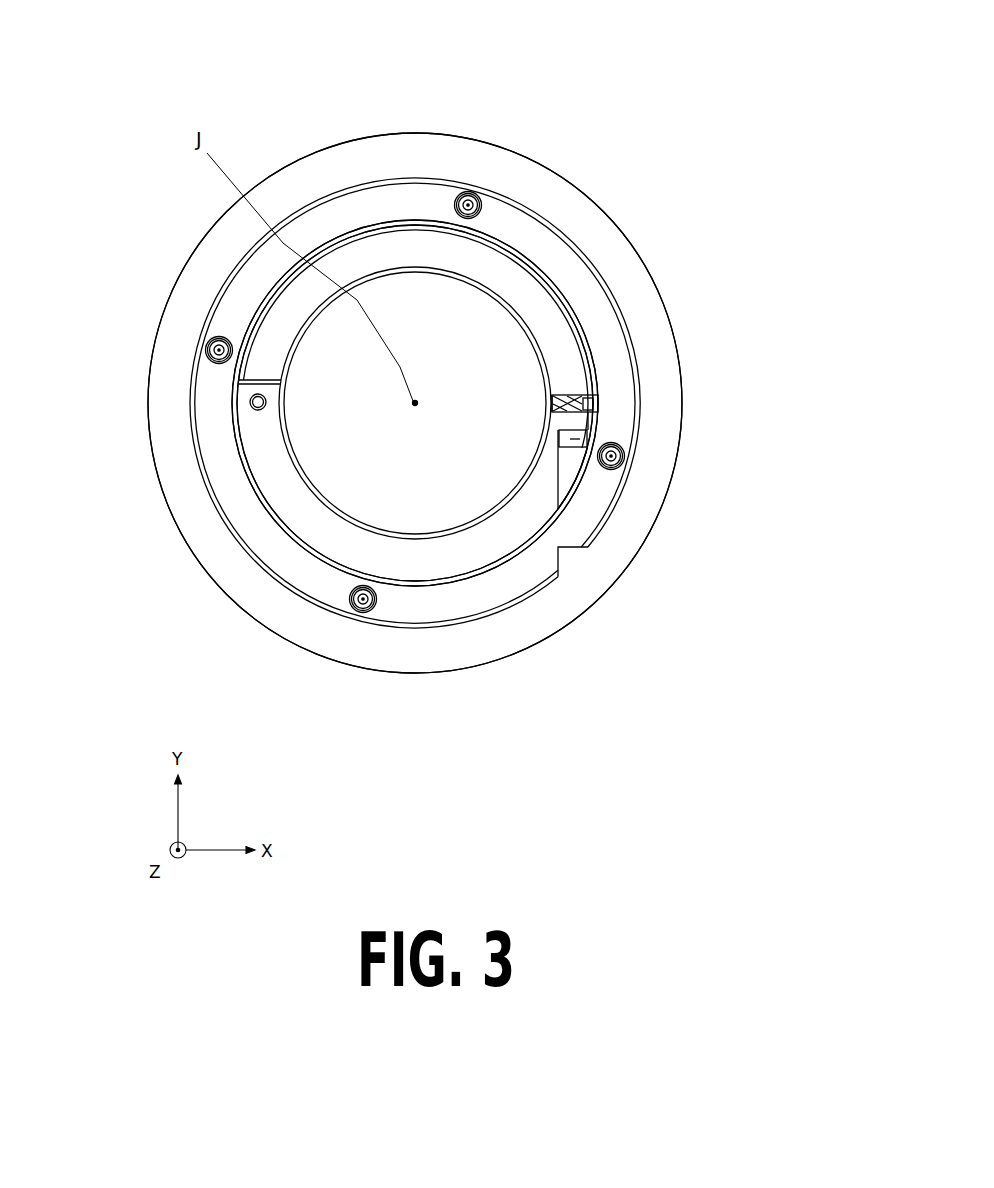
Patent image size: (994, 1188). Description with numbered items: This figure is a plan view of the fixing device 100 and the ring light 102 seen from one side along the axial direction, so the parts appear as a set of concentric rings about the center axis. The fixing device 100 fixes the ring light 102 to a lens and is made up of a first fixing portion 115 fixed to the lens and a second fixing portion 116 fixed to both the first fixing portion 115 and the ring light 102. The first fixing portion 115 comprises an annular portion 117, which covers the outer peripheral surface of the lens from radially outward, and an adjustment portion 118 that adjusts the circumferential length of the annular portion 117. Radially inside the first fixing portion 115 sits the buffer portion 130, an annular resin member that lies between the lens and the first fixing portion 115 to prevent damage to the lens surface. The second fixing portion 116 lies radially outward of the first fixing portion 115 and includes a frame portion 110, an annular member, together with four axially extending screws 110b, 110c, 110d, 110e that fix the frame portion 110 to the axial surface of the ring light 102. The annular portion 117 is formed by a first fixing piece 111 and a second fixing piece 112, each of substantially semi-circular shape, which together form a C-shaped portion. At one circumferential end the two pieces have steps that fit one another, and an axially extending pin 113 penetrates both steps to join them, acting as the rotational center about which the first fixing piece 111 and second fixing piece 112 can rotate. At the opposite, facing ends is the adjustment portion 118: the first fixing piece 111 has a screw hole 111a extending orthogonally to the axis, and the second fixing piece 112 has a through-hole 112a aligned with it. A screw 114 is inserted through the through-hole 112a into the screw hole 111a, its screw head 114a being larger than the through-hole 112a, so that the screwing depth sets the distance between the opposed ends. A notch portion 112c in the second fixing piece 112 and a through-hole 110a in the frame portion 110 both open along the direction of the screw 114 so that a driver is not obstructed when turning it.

The fixing device 100 is at (580, 235).
The ring light 102 is at (630, 511).
The frame portion 110 is at (434, 398).
The through-hole 110a is at (568, 551).
The screw 110b is at (354, 613).
The screw 110c is at (204, 347).
The screw 110d is at (469, 192).
The screw 110e is at (624, 459).
The first fixing piece 111 is at (563, 330).
The screw hole 111a is at (553, 395).
The second fixing piece 112 is at (497, 540).
The through-hole 112a is at (681, 371).
The notch portion 112c is at (559, 470).
The pin 113 is at (252, 407).
The screw 114 is at (585, 406).
The screw head 114a is at (603, 413).
The first fixing portion 115 is at (514, 241).
The second fixing portion 116 is at (600, 272).
The annular portion 117 is at (388, 215).
The adjustment portion 118 is at (568, 433).
The buffer portion 130 is at (333, 505).